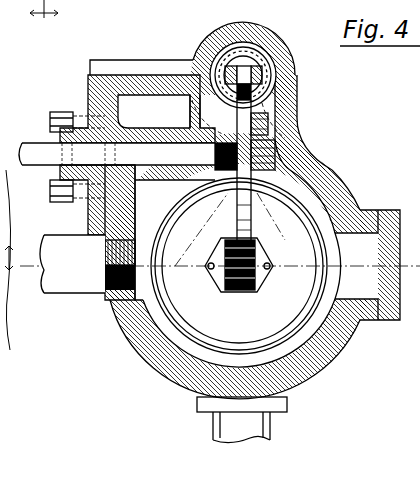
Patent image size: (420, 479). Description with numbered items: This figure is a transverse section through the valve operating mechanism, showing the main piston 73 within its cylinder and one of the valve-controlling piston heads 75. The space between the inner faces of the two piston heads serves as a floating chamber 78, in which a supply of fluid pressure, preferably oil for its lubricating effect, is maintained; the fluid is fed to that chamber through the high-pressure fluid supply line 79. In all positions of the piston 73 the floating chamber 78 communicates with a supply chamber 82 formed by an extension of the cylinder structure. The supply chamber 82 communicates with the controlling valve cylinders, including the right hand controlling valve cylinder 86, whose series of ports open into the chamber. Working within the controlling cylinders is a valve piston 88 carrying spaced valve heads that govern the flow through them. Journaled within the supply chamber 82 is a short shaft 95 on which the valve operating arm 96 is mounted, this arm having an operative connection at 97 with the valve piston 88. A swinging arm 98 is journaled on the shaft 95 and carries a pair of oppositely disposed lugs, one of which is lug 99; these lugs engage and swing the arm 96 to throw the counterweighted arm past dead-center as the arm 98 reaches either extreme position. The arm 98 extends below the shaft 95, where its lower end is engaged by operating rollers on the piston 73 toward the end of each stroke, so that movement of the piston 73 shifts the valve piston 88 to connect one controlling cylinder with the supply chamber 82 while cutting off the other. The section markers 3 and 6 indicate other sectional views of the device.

The section line 3 is at (44, 16).
The section line 6 is at (12, 258).
The piston 73 is at (236, 288).
The valve-controlling piston head 75 is at (209, 299).
The floating chamber 78 is at (220, 233).
The high-pressure fluid supply line 79 is at (63, 254).
The supply chamber 82 is at (145, 107).
The right hand controlling valve cylinder 86 is at (256, 66).
The valve piston 88 is at (260, 68).
The short shaft 95 is at (30, 158).
The valve operating arm 96 is at (256, 108).
The operative connection 97 is at (240, 68).
The swinging arm 98 is at (242, 217).
The lug 99 is at (262, 128).